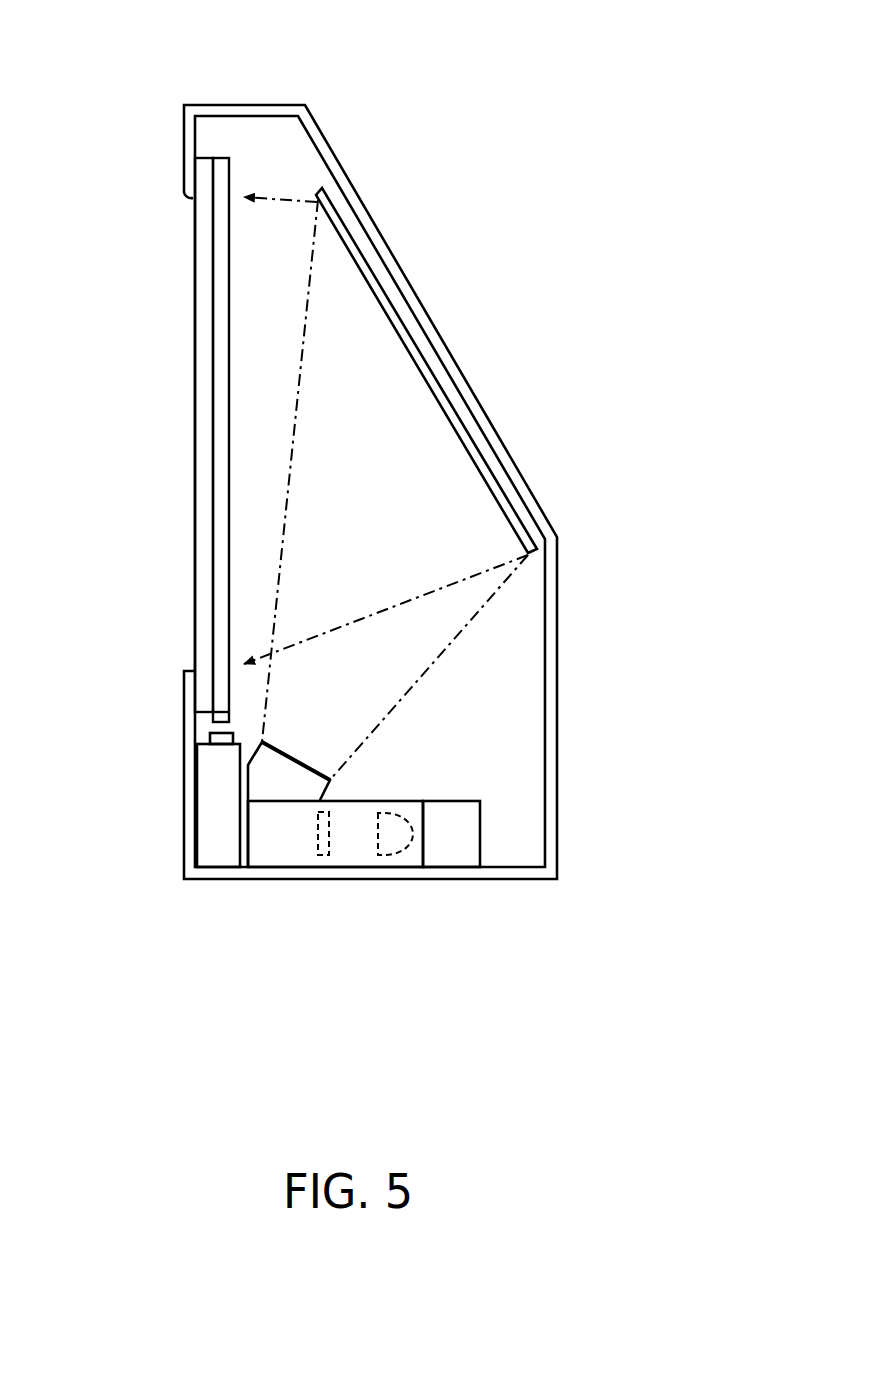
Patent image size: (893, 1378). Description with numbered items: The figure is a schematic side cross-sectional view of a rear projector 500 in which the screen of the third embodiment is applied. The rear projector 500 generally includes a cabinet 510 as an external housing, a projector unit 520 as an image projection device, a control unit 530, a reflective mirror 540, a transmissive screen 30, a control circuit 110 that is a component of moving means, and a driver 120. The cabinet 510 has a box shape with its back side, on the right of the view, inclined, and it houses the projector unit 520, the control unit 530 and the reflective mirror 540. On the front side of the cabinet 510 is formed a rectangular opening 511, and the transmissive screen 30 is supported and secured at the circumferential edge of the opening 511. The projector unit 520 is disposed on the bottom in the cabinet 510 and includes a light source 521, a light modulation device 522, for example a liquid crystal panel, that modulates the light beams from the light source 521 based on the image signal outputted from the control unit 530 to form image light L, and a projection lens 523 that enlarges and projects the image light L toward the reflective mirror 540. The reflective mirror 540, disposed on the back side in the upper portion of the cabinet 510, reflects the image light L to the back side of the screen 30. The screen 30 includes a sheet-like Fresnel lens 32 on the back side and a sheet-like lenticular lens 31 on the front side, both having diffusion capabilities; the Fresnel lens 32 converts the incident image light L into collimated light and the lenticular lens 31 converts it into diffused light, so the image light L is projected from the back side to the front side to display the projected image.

The rear projector 500 is at (298, 472).
The cabinet 510 is at (372, 217).
The opening 511 is at (189, 198).
The reflective mirror 540 is at (395, 292).
The transmissive screen 30 is at (143, 440).
The lenticular lens 31 is at (203, 360).
The Fresnel lens 32 is at (112, 338).
The control circuit 110 is at (140, 800).
The driver 120 is at (223, 807).
The projection lens 523 is at (308, 765).
The projector unit 520 is at (336, 836).
The light modulation device 522 is at (323, 857).
The light source 521 is at (388, 857).
The control unit 530 is at (463, 800).
The image light L is at (420, 595).